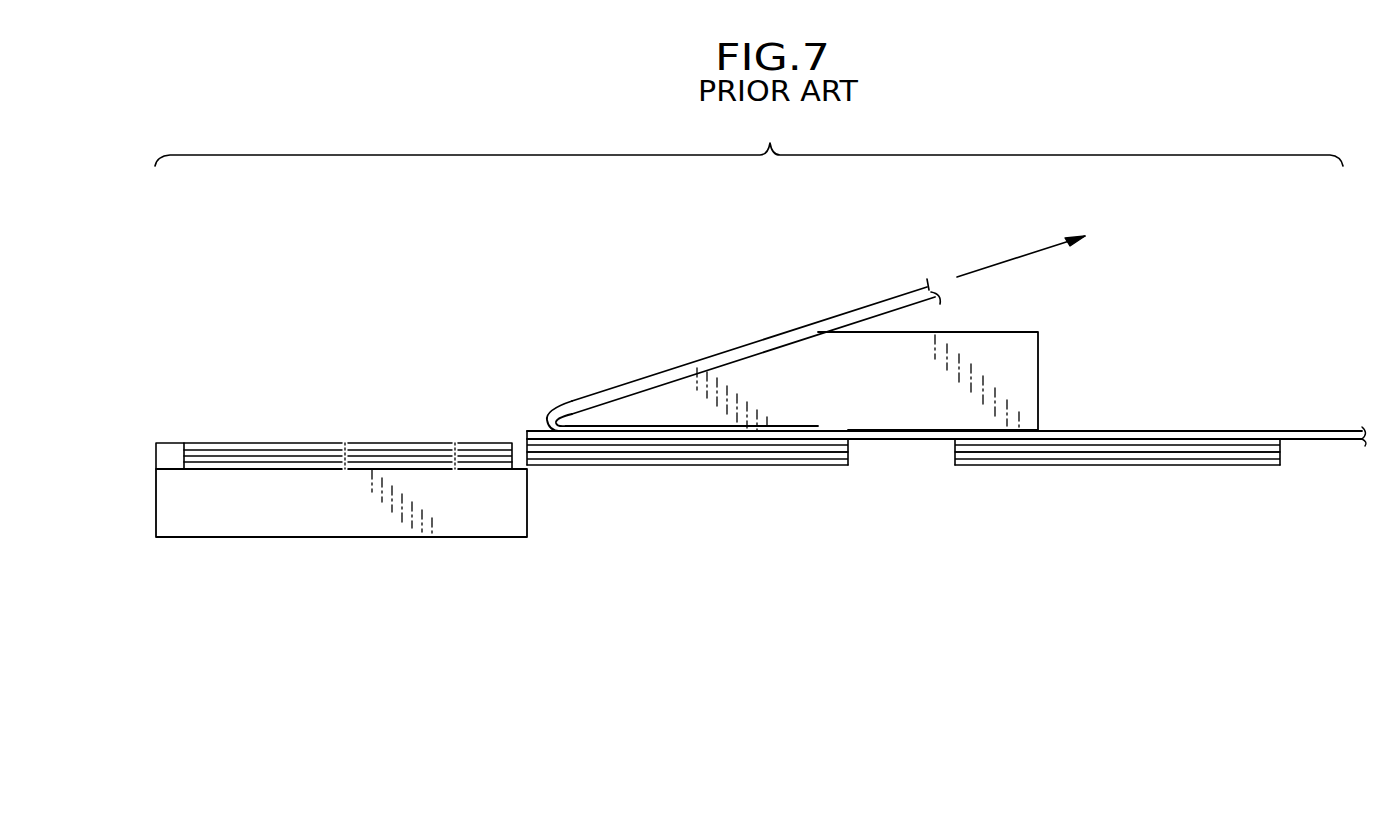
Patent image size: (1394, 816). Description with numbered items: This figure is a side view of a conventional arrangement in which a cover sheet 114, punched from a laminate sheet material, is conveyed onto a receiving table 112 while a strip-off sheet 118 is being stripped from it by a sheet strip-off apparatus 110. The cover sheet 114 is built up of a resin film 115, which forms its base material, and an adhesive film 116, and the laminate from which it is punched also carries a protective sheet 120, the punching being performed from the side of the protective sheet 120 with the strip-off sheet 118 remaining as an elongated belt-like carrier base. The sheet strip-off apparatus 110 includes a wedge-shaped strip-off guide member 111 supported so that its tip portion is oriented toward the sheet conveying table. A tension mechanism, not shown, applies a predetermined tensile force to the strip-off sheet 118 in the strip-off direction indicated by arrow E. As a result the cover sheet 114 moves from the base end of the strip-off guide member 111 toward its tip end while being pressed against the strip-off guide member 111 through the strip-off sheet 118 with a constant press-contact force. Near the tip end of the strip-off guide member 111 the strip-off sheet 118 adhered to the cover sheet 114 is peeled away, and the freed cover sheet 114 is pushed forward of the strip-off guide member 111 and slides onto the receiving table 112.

The sheet strip-off apparatus 110 is at (584, 275).
The strip-off guide member 111 is at (1040, 380).
The receiving table 112 is at (156, 485).
The cover sheet 114 is at (468, 325).
The resin film 115 is at (383, 460).
The adhesive film 116 is at (343, 460).
The strip-off sheet 118 is at (880, 300).
The protective sheet 120 is at (318, 470).
The strip-off direction E is at (1017, 258).